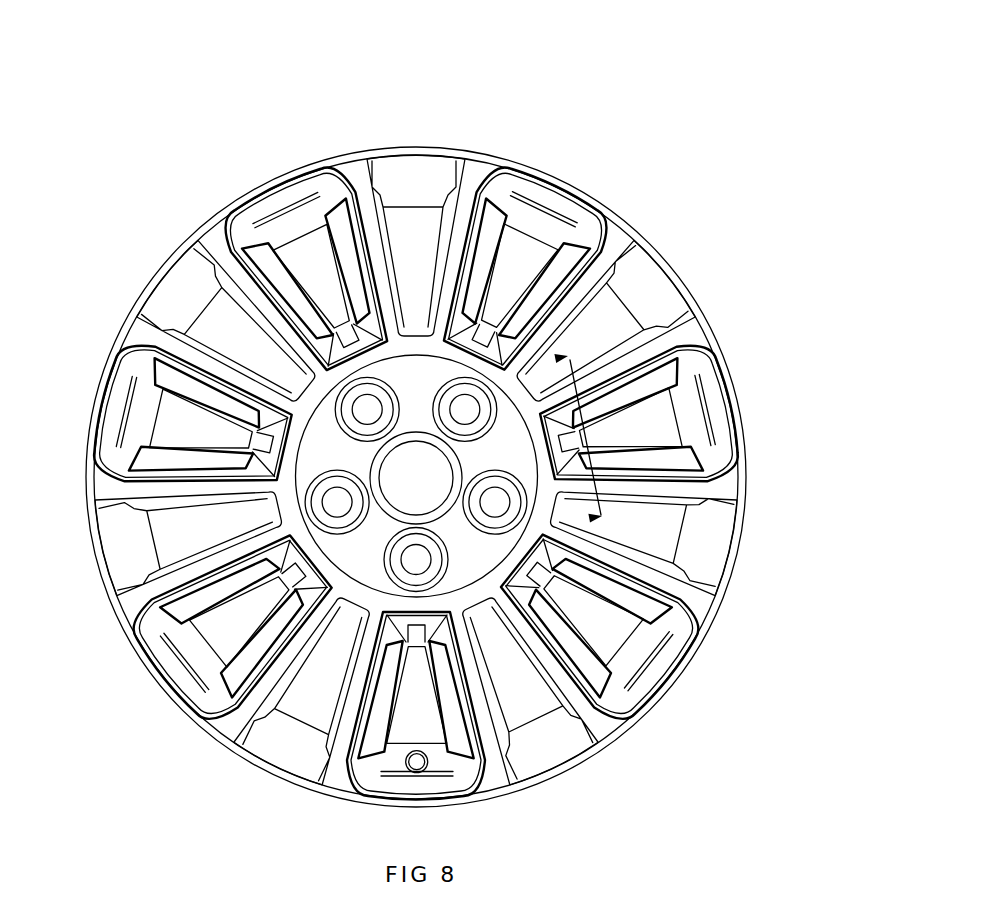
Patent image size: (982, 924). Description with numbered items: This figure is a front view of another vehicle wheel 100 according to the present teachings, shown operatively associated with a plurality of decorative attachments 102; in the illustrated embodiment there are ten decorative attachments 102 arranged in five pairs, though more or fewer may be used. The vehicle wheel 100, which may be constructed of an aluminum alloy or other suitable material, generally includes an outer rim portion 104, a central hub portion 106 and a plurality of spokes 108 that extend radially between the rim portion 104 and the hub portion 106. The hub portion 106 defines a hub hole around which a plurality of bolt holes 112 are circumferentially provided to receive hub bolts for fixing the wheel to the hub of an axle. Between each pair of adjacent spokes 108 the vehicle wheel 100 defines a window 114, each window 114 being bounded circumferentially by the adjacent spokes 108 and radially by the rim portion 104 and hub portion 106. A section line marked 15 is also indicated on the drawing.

The vehicle wheel 100 is at (697, 83).
The decorative attachments 102 is at (377, 731).
The rim portion 104 is at (283, 180).
The hub portion 106 is at (517, 577).
The spokes 108 is at (445, 236).
The bolt holes 112 is at (332, 380).
The window 114 is at (187, 660).
The section line 15- 15 is at (555, 358).